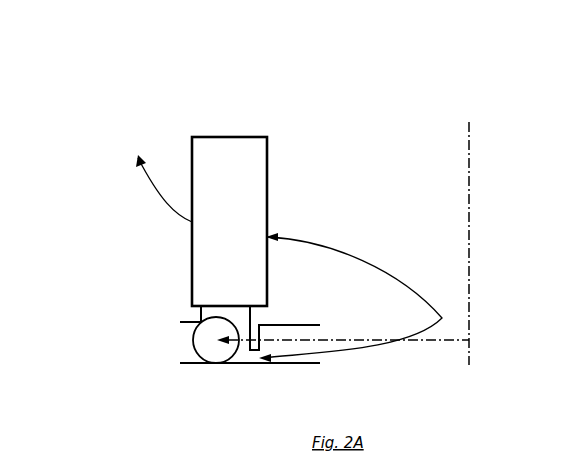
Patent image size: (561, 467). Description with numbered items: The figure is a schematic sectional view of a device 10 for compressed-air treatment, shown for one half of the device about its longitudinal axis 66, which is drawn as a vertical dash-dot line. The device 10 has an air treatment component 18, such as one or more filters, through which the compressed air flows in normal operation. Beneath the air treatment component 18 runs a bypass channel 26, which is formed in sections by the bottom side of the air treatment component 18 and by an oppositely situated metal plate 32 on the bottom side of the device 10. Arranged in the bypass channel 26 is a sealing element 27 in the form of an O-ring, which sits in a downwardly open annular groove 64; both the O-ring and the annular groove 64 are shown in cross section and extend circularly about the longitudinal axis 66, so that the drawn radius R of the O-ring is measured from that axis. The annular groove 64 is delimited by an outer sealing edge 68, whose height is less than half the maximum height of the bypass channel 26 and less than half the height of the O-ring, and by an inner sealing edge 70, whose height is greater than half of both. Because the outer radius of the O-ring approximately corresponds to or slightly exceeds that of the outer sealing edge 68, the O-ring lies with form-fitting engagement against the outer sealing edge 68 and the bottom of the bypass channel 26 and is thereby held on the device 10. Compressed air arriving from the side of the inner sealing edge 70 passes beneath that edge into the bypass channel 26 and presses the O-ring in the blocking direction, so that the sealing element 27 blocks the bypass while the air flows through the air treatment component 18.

The device for compressed-air treatment 10 is at (318, 144).
The air treatment component 18 is at (244, 228).
The bypass channel 26 is at (173, 342).
The sealing element 27 is at (216, 361).
The metal plate 32 is at (298, 365).
The annular groove 64 is at (214, 312).
The longitudinal axis 66 is at (471, 170).
The outer sealing edge 68 is at (187, 315).
The inner sealing edge 70 is at (260, 318).